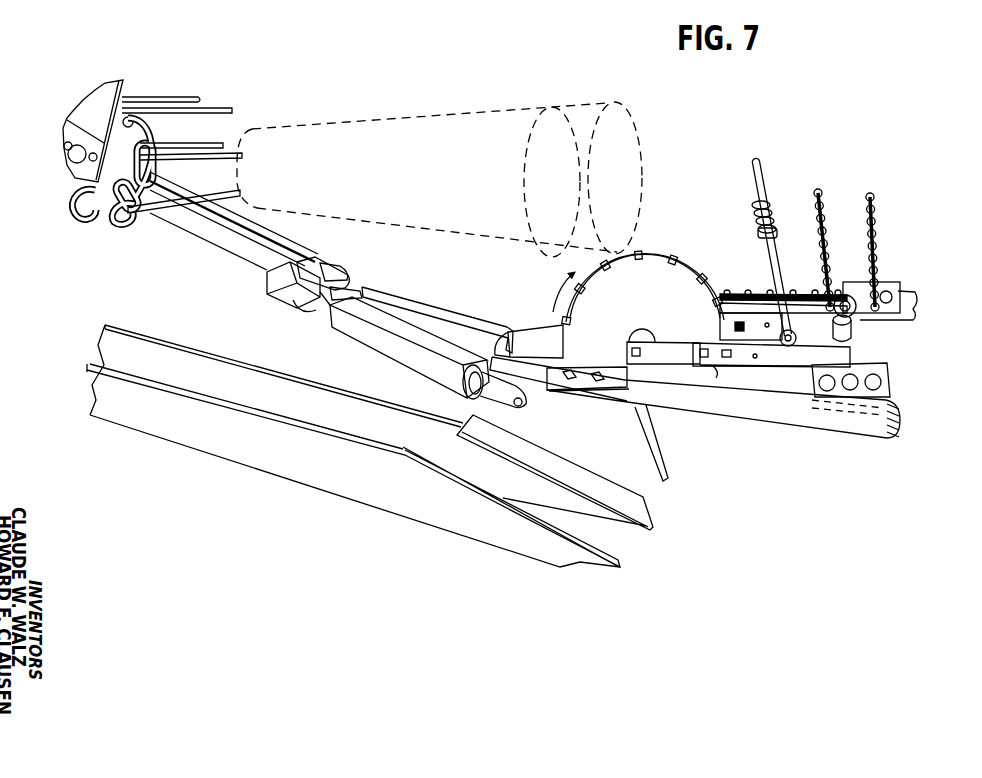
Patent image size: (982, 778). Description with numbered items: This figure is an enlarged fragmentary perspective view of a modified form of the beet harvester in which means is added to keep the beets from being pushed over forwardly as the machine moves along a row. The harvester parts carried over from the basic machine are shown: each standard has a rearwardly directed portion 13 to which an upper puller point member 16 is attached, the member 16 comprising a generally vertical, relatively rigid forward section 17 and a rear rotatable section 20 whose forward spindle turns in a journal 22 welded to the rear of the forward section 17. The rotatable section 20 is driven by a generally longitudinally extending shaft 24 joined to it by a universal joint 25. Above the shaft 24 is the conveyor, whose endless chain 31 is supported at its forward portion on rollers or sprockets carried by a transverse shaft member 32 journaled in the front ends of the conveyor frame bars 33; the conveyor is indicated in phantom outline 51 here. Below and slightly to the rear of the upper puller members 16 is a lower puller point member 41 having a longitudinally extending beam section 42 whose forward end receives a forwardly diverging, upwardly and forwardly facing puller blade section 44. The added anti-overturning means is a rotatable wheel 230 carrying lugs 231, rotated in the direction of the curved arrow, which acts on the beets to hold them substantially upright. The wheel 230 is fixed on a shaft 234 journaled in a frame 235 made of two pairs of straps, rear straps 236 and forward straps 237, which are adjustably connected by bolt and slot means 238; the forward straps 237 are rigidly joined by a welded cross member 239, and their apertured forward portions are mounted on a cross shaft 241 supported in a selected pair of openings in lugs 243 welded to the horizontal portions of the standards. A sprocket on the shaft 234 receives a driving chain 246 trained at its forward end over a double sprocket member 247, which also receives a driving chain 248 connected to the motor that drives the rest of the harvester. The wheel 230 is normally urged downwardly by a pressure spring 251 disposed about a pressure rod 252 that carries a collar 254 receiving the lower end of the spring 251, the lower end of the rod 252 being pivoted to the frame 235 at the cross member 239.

The rearwardly directed portion 13 is at (759, 414).
The upper puller point member 16 is at (526, 347).
The forward section 17 is at (656, 466).
The rear rotatable section 20 is at (403, 322).
The journal 22 is at (506, 397).
The shaft 24 is at (237, 238).
The universal joint 25 is at (293, 302).
The endless chain 31 is at (215, 101).
The transverse shaft member 32 is at (72, 168).
The conveyor frame bar 33 is at (70, 140).
The lower puller point member 41 is at (332, 426).
The beam section 42 is at (155, 402).
The puller blade section 44 is at (621, 562).
The bale (phantom) 51 is at (571, 126).
The rotatable wheel 230 is at (647, 268).
The lugs 231 is at (698, 275).
The shaft 234 is at (630, 338).
The frame 235 is at (673, 331).
The rear straps 236 is at (660, 355).
The forward straps 237 is at (793, 362).
The bolt and slot means 238 is at (716, 362).
The cross member 239 is at (786, 342).
The cross shaft 241 is at (826, 391).
The lugs 243 is at (892, 391).
The driving chain 246 is at (760, 293).
The double sprocket member 247 is at (866, 328).
The driving chain 248 is at (826, 205).
The pressure spring 251 is at (771, 212).
The pressure rod 252 is at (762, 165).
The collar 254 is at (760, 231).